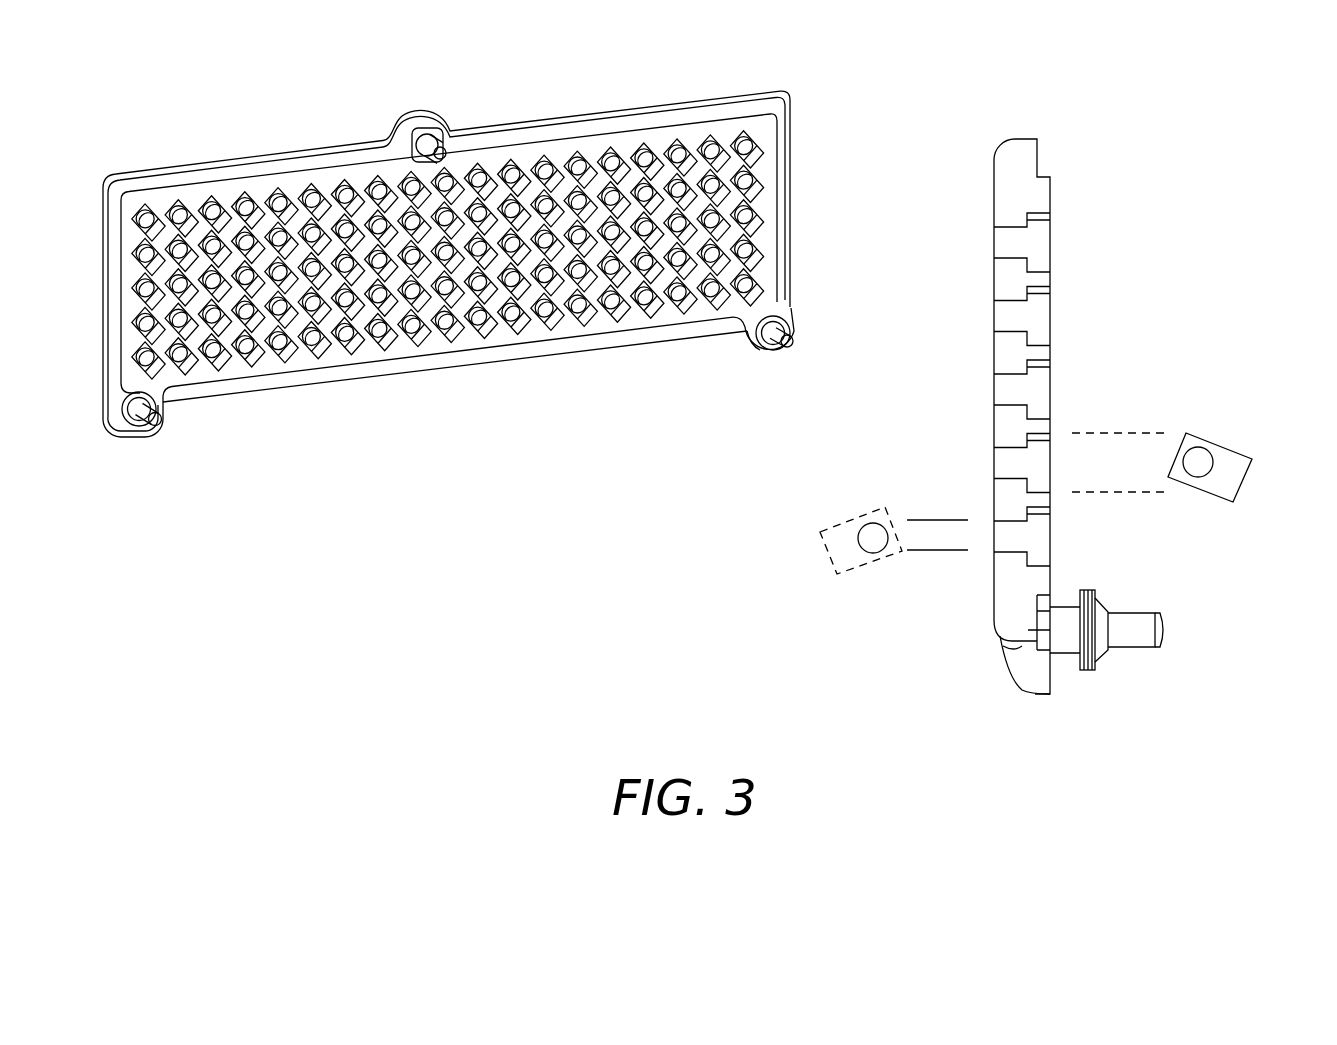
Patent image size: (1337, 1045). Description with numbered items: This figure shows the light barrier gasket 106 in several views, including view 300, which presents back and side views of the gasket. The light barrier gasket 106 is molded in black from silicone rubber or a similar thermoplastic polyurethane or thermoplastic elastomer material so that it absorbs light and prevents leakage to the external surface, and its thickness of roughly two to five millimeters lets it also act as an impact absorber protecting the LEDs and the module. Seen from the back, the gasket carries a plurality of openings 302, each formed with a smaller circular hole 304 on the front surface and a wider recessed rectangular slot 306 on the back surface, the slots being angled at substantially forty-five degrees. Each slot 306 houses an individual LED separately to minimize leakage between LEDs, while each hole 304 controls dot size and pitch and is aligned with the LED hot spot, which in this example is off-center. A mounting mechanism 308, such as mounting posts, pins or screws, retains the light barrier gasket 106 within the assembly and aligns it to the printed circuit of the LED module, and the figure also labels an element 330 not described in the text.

The light barrier gasket 106 is at (766, 92).
The view 300 is at (1280, 697).
The openings 302 is at (632, 137).
The hole 304 is at (883, 550).
The slot 306 is at (1204, 438).
The mounting mechanism 308 is at (433, 127).
The lens array 330 is at (716, 425).